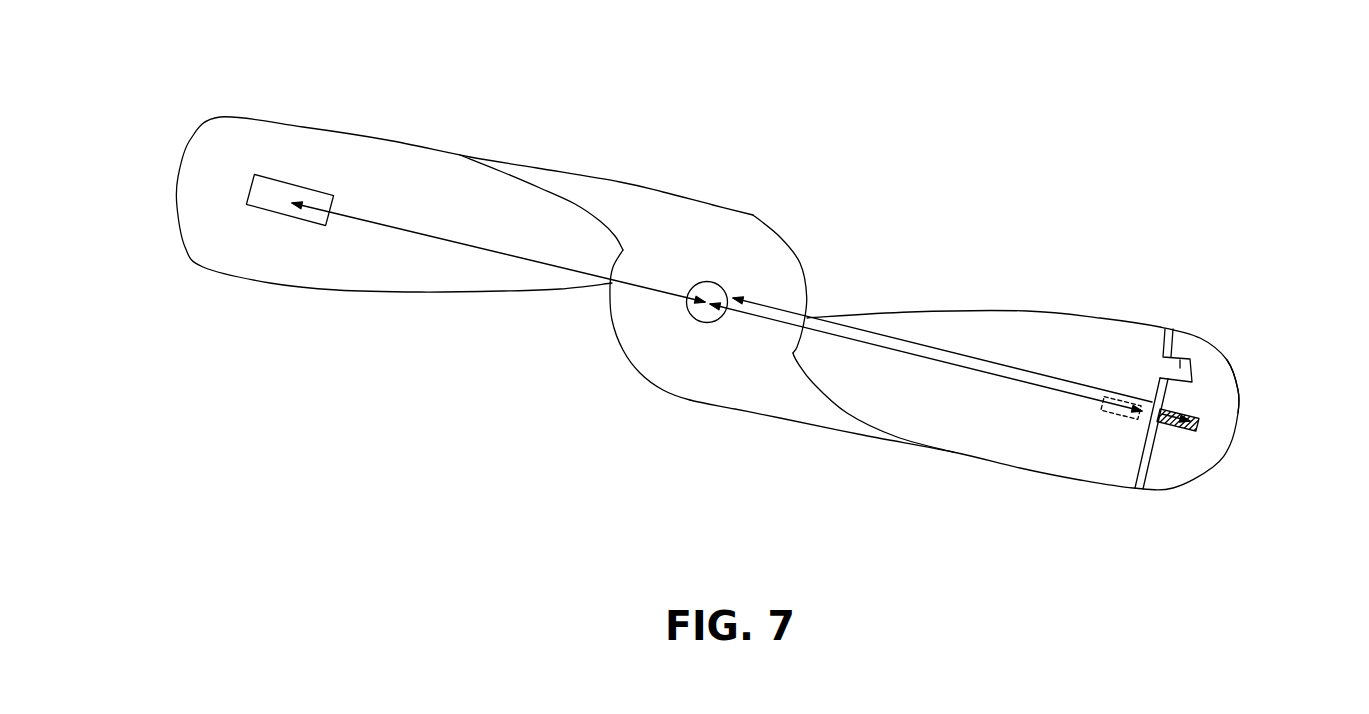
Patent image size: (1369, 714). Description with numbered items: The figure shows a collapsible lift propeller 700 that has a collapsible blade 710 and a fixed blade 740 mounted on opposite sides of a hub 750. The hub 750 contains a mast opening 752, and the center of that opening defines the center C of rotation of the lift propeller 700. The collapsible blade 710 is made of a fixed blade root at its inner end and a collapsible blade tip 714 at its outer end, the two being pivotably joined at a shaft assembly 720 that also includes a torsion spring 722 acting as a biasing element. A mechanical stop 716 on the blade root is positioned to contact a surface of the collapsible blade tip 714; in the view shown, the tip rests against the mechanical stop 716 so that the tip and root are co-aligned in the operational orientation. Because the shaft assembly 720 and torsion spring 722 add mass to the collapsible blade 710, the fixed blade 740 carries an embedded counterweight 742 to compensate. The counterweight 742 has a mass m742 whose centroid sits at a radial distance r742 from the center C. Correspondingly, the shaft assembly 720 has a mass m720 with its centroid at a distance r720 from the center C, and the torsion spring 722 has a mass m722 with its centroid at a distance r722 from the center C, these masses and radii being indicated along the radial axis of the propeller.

The lift propeller 700 is at (822, 47).
The collapsible blade 710 is at (1152, 172).
The collapsible blade tip 714 is at (1224, 392).
The mechanical stop 716 is at (1182, 368).
The shaft assembly 720 is at (1151, 428).
The torsion spring 722 is at (1196, 428).
The fixed blade 740 is at (442, 47).
The counterweight 742 is at (292, 183).
The hub 750 is at (753, 255).
The mast opening 752 is at (700, 321).
The center of rotation C is at (707, 300).
The mass of counterweight m742 is at (290, 190).
The radial distance of counterweight mass r742 is at (447, 238).
The radial distance of shaft assembly mass r720 is at (883, 346).
The radial distance of torsion spring mass r722 is at (987, 360).
The mass of shaft assembly m720 is at (1125, 415).
The mass of torsion spring m722 is at (1193, 408).